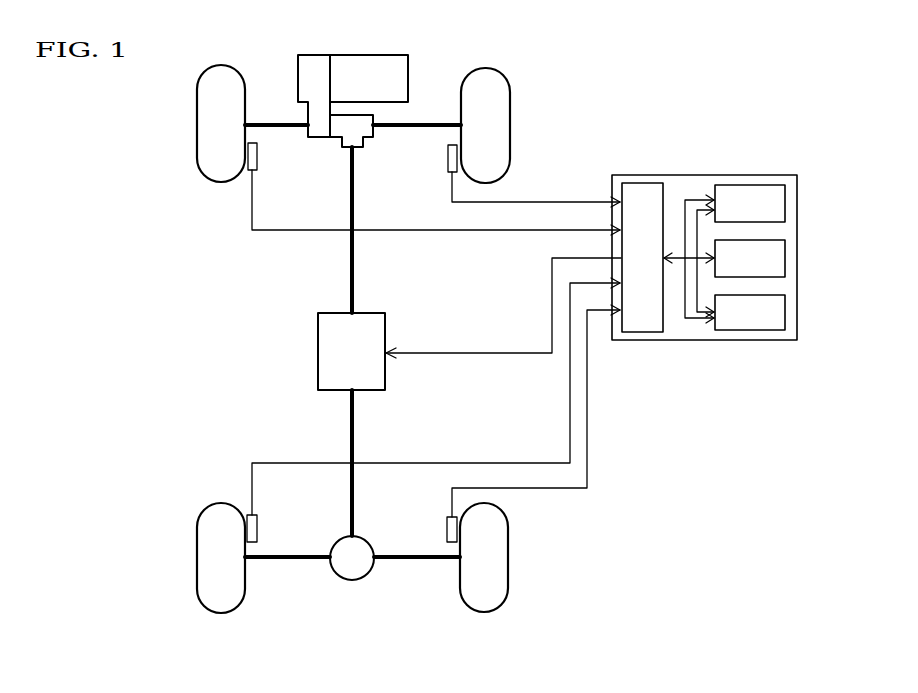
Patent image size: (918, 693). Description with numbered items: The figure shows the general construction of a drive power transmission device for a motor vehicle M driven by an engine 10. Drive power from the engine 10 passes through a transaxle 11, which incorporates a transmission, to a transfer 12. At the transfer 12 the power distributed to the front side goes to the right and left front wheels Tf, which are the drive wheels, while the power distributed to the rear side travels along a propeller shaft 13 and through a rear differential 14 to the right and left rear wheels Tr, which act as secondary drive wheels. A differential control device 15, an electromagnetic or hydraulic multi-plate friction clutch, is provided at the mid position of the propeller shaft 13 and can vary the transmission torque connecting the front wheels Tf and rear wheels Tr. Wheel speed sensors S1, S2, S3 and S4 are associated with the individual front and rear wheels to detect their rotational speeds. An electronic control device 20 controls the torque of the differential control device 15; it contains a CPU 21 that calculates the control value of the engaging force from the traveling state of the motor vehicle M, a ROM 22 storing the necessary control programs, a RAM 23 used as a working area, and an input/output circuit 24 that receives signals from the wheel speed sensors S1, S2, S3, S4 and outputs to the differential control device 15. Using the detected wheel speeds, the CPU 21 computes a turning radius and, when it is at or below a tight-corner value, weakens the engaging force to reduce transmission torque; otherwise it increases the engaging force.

The engine 10 is at (385, 62).
The transaxle 11 is at (310, 62).
The transfer 12 is at (342, 142).
The propeller shaft 13 is at (354, 252).
The rear differential 14 is at (355, 575).
The differential control device 15 is at (317, 353).
The electronic control device 20 is at (715, 175).
The CPU 21 is at (787, 203).
The ROM 22 is at (787, 260).
The RAM 23 is at (787, 312).
The input/output circuit 24 is at (643, 183).
The wheel speed sensor S1 is at (258, 163).
The wheel speed sensor S2 is at (448, 157).
The wheel speed sensor S3 is at (257, 530).
The wheel speed sensor S4 is at (447, 528).
The front wheels Tf is at (228, 78).
The rear wheels Tr is at (202, 580).
The motor vehicle M is at (252, 275).